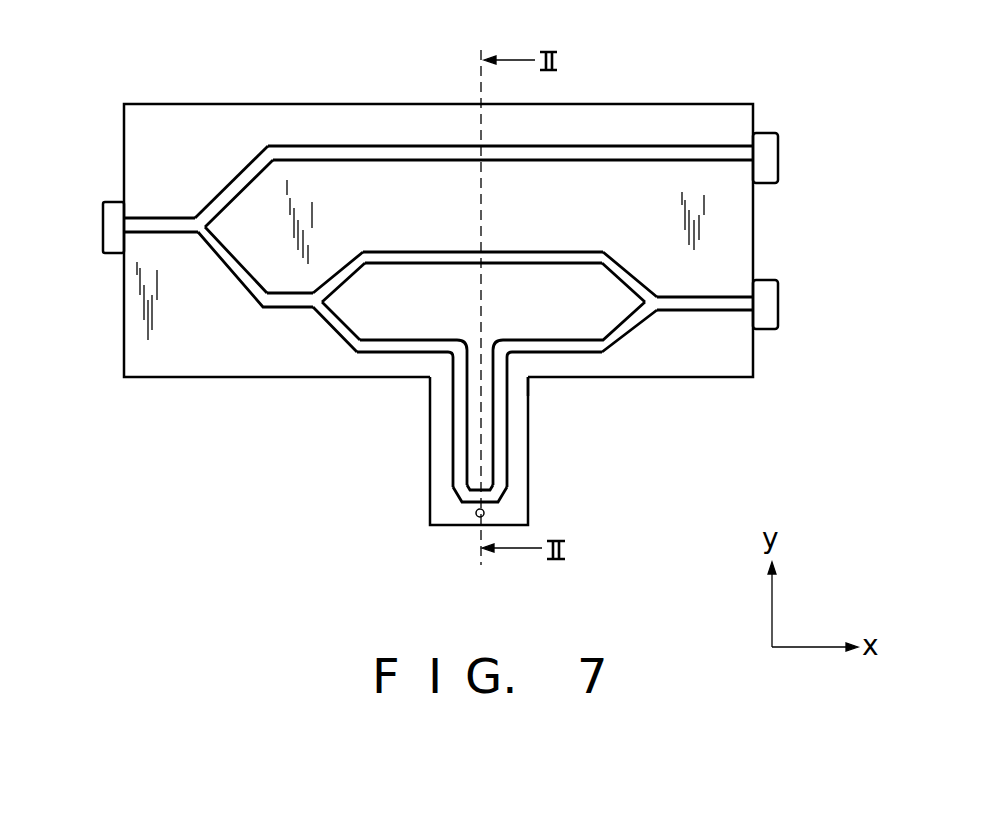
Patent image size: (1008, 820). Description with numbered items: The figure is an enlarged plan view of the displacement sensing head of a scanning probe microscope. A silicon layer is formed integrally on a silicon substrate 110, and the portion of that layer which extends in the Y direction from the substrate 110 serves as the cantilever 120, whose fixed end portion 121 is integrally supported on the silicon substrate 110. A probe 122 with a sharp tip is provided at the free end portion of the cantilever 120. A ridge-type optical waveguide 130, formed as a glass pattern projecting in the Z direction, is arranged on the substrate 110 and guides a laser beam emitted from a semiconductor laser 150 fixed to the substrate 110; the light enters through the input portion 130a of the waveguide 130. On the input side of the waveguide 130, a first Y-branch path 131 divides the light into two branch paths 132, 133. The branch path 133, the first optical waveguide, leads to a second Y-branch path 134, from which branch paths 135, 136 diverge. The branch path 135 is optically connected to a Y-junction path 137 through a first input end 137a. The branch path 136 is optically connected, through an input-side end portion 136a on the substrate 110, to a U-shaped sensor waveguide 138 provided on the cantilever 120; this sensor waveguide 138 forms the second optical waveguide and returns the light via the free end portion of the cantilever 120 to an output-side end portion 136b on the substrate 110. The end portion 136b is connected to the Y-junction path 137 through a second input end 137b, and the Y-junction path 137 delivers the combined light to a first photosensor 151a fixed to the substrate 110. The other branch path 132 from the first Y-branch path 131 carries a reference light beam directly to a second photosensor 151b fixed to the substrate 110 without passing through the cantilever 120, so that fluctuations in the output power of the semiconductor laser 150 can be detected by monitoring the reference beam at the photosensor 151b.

The silicon substrate 110 is at (170, 95).
The cantilever 120 is at (522, 442).
The fixed end portion 121 is at (533, 380).
The probe 122 is at (475, 517).
The optical waveguide 130 is at (339, 130).
The input waveguide portion 130a is at (125, 217).
The first Y-branch path 131 is at (191, 206).
The branch path 132 is at (257, 162).
The branch path 133 is at (235, 272).
The second Y-branch path 134 is at (307, 318).
The branch path 135 is at (495, 258).
The branch path 136 is at (352, 345).
The input-side end portion 136a is at (463, 343).
The output-side end portion 136b is at (497, 343).
The Y-junction path 137 is at (668, 282).
The first input end 137a is at (603, 250).
The second input end 137b is at (625, 340).
The U-shaped sensor waveguide 138 is at (458, 463).
The semiconductor laser 150 is at (103, 208).
The first photosensor 151a is at (765, 302).
The second photosensor 151b is at (768, 165).